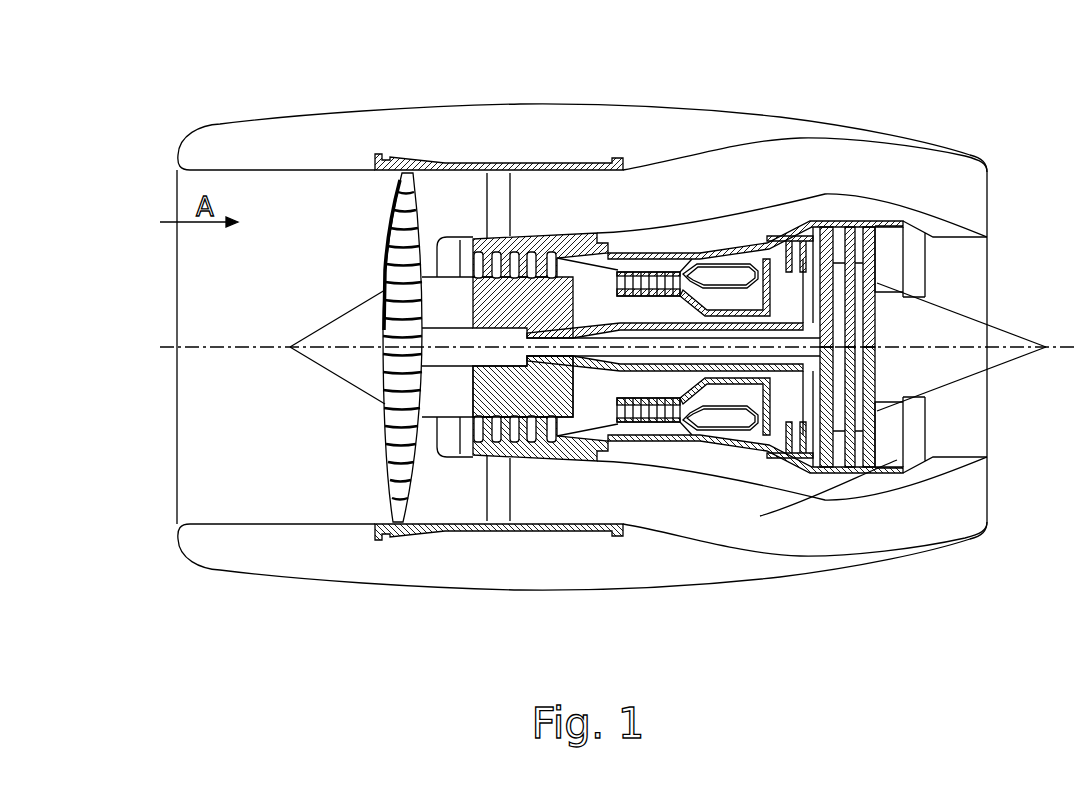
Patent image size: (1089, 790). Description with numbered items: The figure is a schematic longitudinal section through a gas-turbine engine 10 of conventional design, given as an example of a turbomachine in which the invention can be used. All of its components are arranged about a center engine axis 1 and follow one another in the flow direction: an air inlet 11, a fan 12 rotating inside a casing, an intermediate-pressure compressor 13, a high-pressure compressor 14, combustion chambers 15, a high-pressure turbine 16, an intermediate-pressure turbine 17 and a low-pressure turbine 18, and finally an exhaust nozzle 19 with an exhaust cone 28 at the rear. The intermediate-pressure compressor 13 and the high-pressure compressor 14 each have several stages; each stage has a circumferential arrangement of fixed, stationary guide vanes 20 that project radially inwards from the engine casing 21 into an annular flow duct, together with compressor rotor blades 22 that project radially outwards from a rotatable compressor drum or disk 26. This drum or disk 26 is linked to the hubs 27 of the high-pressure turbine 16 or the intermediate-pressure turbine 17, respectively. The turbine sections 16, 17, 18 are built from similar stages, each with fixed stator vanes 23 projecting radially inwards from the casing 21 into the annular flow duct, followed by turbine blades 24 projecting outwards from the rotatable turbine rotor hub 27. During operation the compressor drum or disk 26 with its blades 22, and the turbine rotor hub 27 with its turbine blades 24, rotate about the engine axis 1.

The engine axis 1 is at (247, 350).
The gas-turbine engine 10 is at (760, 172).
The air inlet 11 is at (337, 216).
The fan 12 is at (397, 160).
The intermediate-pressure compressor 13 is at (550, 293).
The high-pressure compressor 14 is at (667, 272).
The combustion chamber 15 is at (727, 275).
The high-pressure turbine 16 is at (757, 257).
The intermediate-pressure turbine 17 is at (888, 220).
The low-pressure turbine 18 is at (817, 222).
The exhaust nozzle 19 is at (917, 276).
The guide vanes 20 is at (468, 461).
The engine casing 21 is at (507, 468).
The compressor rotor blades 22 is at (550, 468).
The stator vanes 23 is at (847, 464).
The turbine blades 24 is at (880, 464).
The compressor drum or disk 26 is at (678, 422).
The turbine rotor hub 27 is at (700, 540).
The exhaust cone 28 is at (1000, 337).